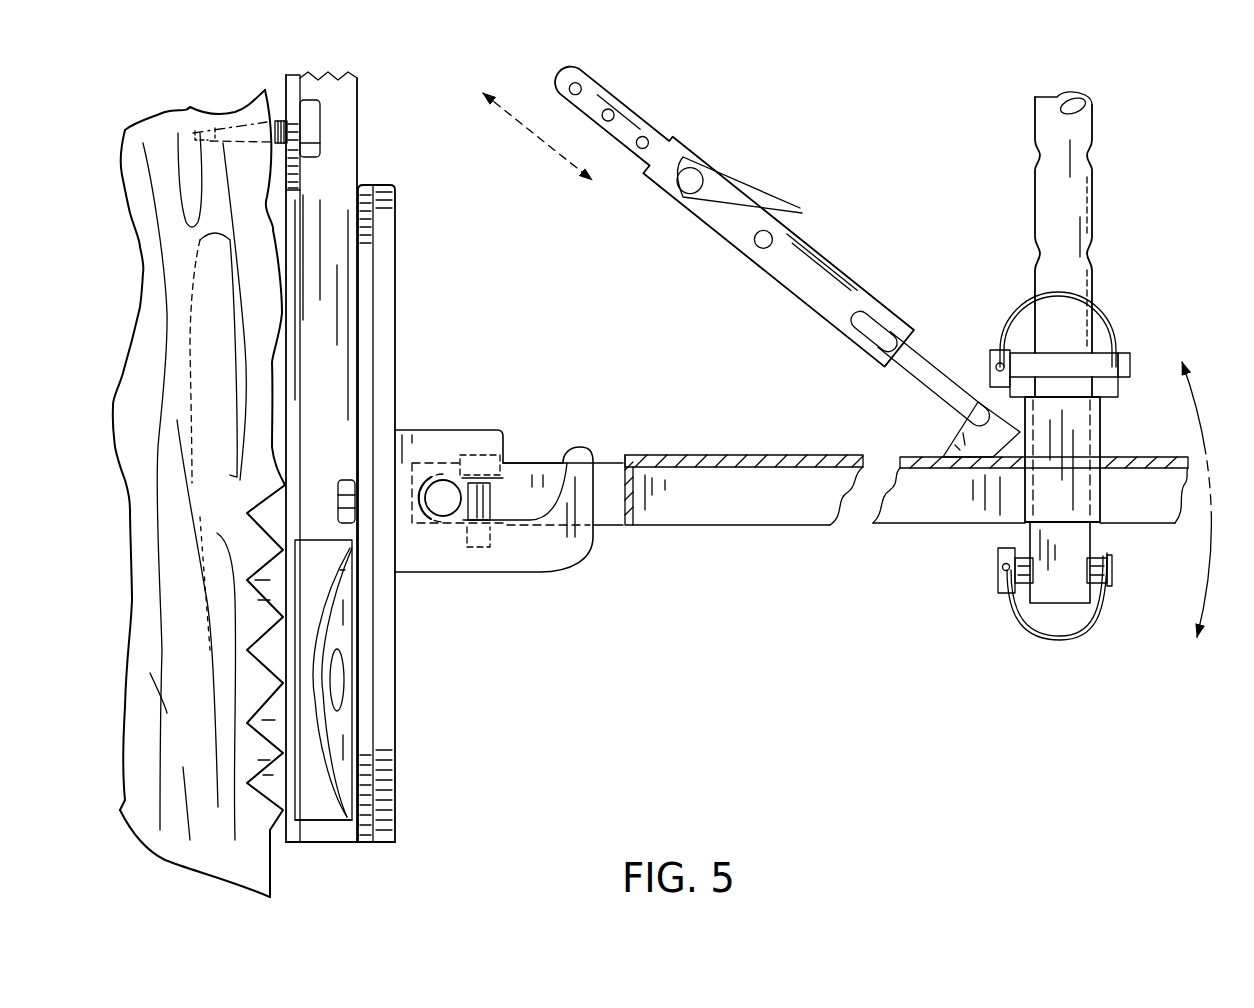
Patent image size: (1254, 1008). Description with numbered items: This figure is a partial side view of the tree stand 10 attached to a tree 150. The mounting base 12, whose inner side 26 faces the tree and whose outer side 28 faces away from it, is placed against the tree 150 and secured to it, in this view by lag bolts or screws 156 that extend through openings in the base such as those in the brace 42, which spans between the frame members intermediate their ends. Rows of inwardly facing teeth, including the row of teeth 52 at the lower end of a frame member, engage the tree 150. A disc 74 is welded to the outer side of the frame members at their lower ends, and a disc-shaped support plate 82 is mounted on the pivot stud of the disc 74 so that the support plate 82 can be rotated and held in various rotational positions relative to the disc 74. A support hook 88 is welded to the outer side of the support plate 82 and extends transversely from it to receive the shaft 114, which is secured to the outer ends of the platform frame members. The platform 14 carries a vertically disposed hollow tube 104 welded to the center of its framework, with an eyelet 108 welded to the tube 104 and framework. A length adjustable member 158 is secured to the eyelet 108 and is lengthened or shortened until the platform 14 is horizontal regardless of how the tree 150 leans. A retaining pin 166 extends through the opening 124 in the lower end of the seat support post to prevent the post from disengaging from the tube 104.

The tree stand 10 is at (995, 193).
The mounting base 12 is at (378, 117).
The platform 14 is at (740, 453).
The inner side 26 is at (368, 160).
The outer side 28 is at (268, 85).
The brace 42 is at (302, 188).
The row of inwardly facing teeth 52 is at (280, 643).
The disc 74 is at (363, 325).
The support plate 82 is at (387, 735).
The support hook 88 is at (443, 430).
The tube 104 is at (1103, 435).
The eyelet 108 is at (955, 430).
The shaft 114 is at (445, 500).
The opening 124 is at (1092, 555).
The tree 150 is at (253, 850).
The lag bolt 156 is at (313, 117).
The length adjustable member 158 is at (822, 245).
The retaining pin 166 is at (1003, 568).